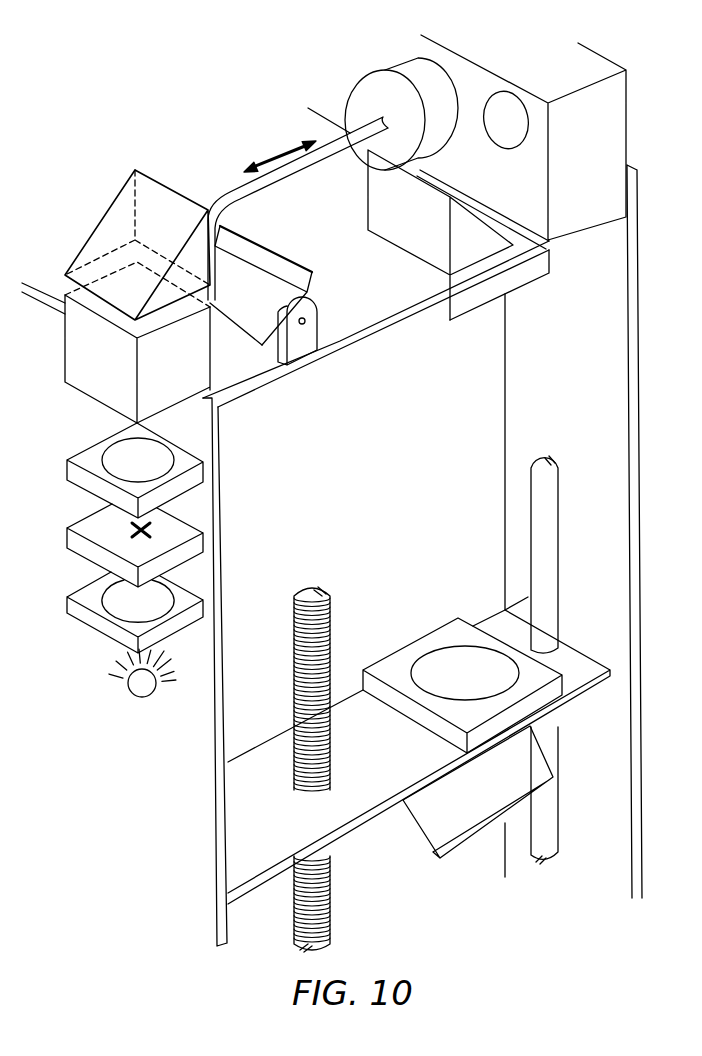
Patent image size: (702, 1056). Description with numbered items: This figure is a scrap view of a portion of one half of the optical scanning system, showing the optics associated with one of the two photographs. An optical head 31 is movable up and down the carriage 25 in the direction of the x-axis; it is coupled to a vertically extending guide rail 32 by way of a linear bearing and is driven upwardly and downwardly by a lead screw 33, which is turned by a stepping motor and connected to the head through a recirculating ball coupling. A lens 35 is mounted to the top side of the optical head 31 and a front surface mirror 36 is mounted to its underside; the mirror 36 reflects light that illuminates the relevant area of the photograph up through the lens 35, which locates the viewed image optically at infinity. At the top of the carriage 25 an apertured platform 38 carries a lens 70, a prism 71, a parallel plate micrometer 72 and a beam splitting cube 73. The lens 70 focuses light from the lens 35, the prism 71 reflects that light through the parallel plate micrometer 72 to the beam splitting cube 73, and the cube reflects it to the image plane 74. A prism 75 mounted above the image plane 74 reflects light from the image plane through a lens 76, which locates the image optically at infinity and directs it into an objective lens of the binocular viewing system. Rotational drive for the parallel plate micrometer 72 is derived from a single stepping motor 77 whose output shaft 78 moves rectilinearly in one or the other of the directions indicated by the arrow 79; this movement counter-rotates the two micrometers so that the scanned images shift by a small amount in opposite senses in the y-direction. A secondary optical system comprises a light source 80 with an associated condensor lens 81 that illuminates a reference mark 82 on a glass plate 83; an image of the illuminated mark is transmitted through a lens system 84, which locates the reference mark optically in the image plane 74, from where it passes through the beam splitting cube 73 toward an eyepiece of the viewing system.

The carriage 25 is at (643, 297).
The optical head 31 is at (250, 835).
The guide rail 32 is at (548, 545).
The lead screw 33 is at (327, 613).
The lens 35 is at (447, 660).
The front surface mirror 36 is at (463, 823).
The apertured platform 38 is at (347, 328).
The lens 70 is at (476, 316).
The prism 71 is at (417, 243).
The parallel plate micrometer 72 is at (277, 243).
The beam splitting cube 73 is at (210, 360).
The image plane 74 is at (85, 303).
The prism 75 is at (112, 200).
The lens 76 is at (508, 137).
The stepping motor 77 is at (360, 92).
The output shaft 78 is at (232, 192).
The arrow 79 is at (272, 158).
The light source 80 is at (125, 698).
The condensor lens 81 is at (98, 622).
The reference mark 82 is at (153, 530).
The glass plate 83 is at (85, 548).
The lens system 84 is at (80, 445).